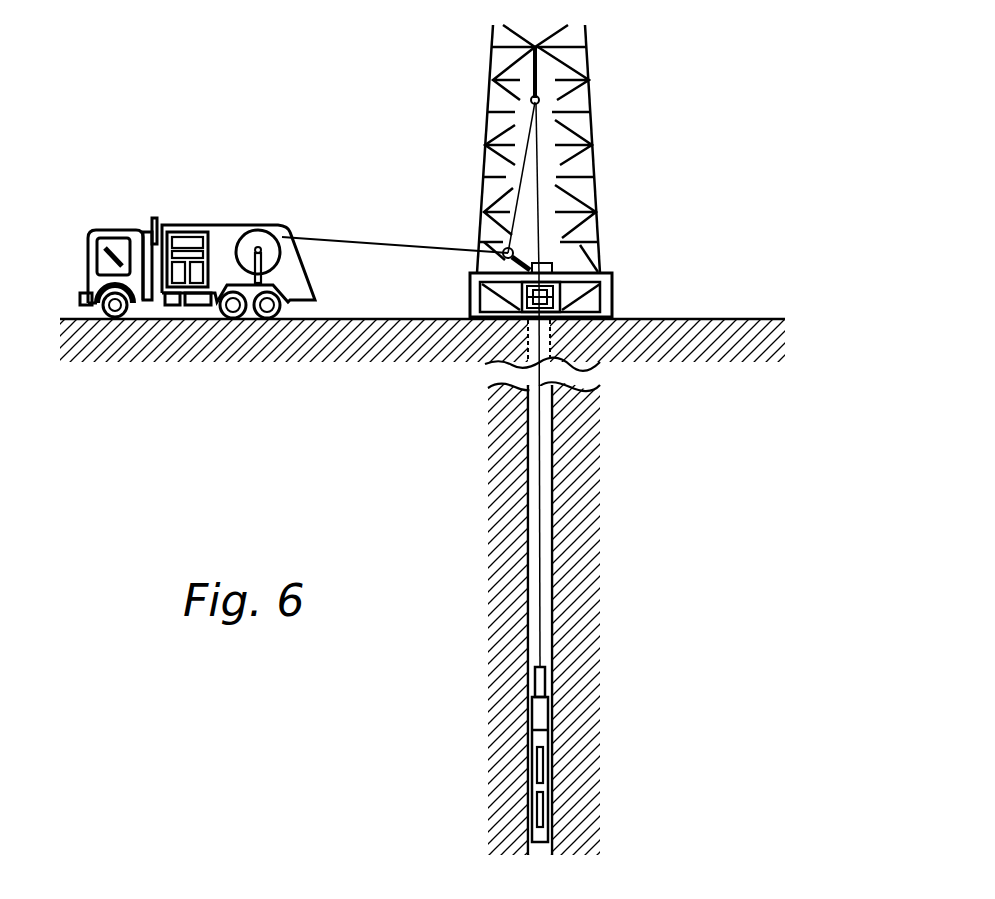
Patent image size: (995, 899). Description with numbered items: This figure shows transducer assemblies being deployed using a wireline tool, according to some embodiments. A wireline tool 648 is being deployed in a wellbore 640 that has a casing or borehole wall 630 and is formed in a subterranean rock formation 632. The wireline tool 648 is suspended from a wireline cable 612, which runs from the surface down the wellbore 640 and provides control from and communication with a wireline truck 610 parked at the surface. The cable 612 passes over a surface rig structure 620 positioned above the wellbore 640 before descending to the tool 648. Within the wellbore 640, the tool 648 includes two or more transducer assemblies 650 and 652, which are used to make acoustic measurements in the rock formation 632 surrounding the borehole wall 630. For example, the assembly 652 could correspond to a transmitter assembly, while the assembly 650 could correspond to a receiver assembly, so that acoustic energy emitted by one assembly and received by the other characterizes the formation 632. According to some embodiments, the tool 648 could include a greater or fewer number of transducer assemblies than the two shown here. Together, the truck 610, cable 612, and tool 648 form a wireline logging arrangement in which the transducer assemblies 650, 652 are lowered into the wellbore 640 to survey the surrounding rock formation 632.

The wireline truck 610 is at (233, 224).
The wireline cable 612 is at (373, 244).
The drilling rig 620 is at (640, 268).
The casing or borehole wall 630 is at (528, 468).
The wellbore 640 is at (548, 515).
The subterranean rock formation 632 is at (615, 587).
The wireline tool 648 is at (618, 665).
The transducer assembly 650 is at (537, 750).
The transducer assembly 652 is at (537, 810).